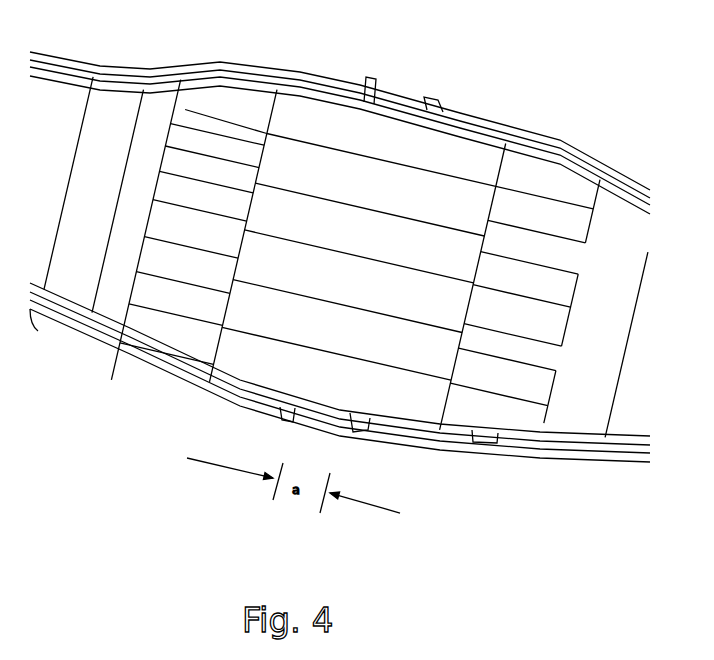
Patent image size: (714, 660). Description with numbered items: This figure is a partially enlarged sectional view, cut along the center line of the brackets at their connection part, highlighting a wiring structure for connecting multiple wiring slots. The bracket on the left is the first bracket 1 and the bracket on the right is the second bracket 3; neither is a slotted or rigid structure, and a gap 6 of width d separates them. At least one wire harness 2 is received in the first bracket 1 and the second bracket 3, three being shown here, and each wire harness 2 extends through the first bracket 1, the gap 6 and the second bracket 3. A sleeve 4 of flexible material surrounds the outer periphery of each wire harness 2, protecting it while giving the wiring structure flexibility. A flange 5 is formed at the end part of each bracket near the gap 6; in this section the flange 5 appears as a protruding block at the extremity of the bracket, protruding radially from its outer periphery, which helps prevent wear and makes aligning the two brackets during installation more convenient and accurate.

The first bracket 1 is at (105, 163).
The wire harness 2 is at (192, 307).
The second bracket 3 is at (591, 362).
The sleeve 4 is at (457, 146).
The flange 5 is at (369, 78).
The gap 6 is at (342, 418).